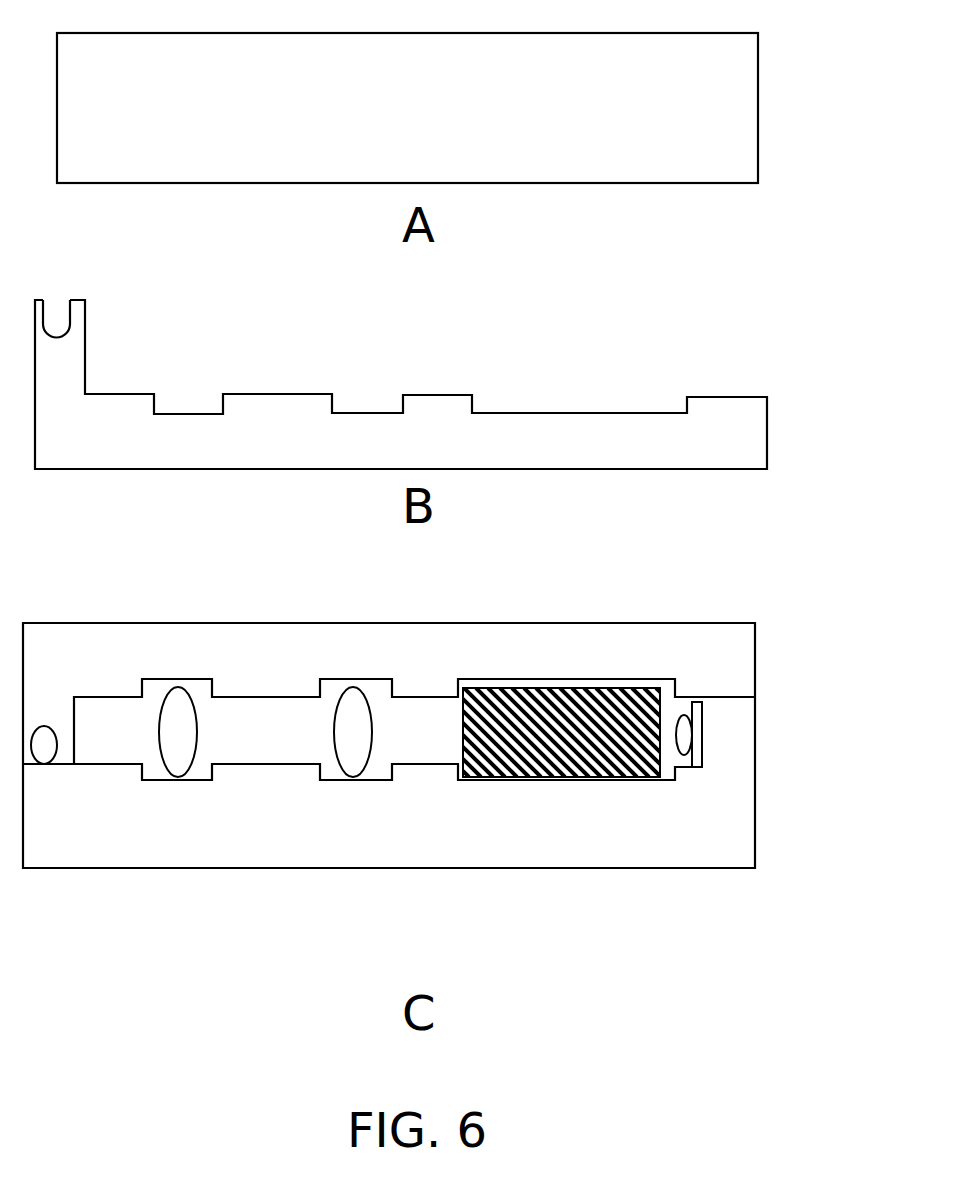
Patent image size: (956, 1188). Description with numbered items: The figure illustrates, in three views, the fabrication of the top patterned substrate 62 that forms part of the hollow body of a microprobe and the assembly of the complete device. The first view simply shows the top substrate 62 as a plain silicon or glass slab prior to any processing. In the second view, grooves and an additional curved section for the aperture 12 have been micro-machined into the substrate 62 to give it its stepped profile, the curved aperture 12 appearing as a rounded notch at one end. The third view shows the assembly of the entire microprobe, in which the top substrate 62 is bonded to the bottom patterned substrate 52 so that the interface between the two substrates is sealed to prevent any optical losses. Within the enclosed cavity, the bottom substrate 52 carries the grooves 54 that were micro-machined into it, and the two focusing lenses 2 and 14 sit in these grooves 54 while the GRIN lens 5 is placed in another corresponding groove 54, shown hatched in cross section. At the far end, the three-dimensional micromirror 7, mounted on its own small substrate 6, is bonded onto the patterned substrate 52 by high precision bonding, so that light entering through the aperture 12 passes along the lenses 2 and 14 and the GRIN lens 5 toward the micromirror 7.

In FIG. 6A, the top patterned substrate 62 is at (728, 93).
In FIG. 6B, the top patterned substrate 62 is at (753, 404).
In FIG. 6C, the top patterned substrate 62 is at (755, 645).
In FIG. 6C, the bottom patterned substrate 52 is at (740, 830).
In FIG. 6B, the aperture 12 is at (57, 300).
In FIG. 6C, the aperture 12 is at (43, 752).
In FIG. 6B, the grooves 54 is at (633, 415).
In FIG. 6C, the focusing lens 2 is at (175, 752).
In FIG. 6C, the focusing lens 14 is at (358, 752).
In FIG. 6C, the GRIN lens 5 is at (530, 773).
In FIG. 6C, the substrate 6 is at (703, 725).
In FIG. 6C, the 3-D micromirror 7 is at (688, 753).